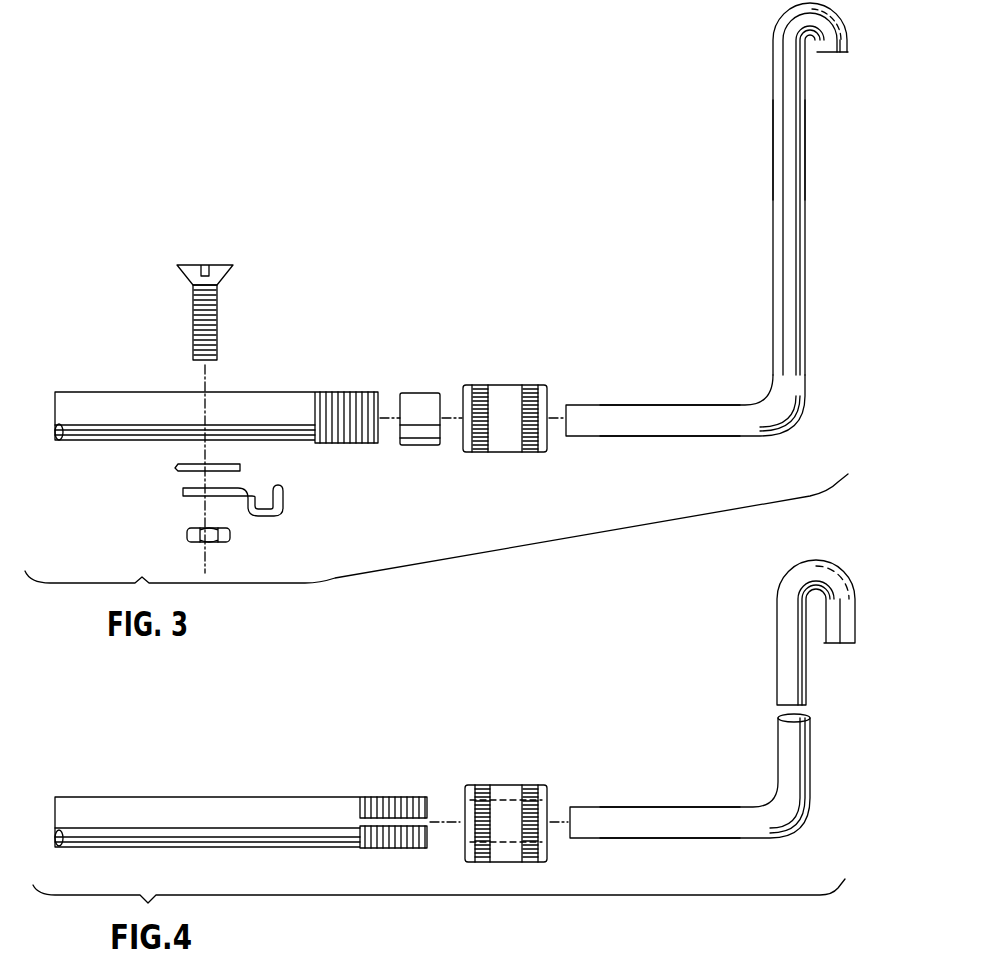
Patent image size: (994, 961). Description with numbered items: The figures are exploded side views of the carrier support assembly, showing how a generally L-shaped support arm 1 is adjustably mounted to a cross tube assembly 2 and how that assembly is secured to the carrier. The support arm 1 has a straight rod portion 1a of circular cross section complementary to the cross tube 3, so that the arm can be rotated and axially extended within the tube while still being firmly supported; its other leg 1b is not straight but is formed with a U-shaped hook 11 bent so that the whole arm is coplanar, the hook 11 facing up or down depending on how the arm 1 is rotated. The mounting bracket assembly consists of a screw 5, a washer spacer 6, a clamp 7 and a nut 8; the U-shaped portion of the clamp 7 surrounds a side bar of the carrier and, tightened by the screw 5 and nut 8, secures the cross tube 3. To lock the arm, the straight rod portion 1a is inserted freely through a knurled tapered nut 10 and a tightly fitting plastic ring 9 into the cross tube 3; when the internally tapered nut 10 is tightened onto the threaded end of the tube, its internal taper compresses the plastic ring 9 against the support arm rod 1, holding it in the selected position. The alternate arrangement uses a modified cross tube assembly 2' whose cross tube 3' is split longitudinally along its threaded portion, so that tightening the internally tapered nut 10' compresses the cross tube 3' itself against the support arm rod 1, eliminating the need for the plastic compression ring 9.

In FIG. 3, the support arm 1 is at (773, 232).
In FIG. 4, the support arm 1 is at (777, 771).
In FIG. 3, the straight rod portion 1a is at (645, 405).
In FIG. 4, the straight rod portion 1a is at (705, 812).
In FIG. 3, the other leg 1b is at (785, 137).
In FIG. 4, the other leg 1b is at (782, 681).
In FIG. 3, the U-shaped hook 11 is at (830, 52).
In FIG. 4, the U-shaped hook 11 is at (838, 643).
In FIG. 3, the cross tube assembly 2 is at (216, 400).
In FIG. 3, the cross tube 3 is at (185, 455).
In FIG. 3, the screw 5 is at (228, 273).
In FIG. 3, the washer spacer 6 is at (178, 469).
In FIG. 3, the clamp 7 is at (284, 511).
In FIG. 3, the nut 8 is at (190, 535).
In FIG. 3, the plastic ring 9 is at (420, 393).
In FIG. 3, the knurled tapered nut 10 is at (513, 402).
In FIG. 4, the modified cross tube assembly 2' is at (241, 803).
In FIG. 4, the modified cross tube 3' is at (207, 802).
In FIG. 4, the internally tapered nut 10' is at (526, 810).